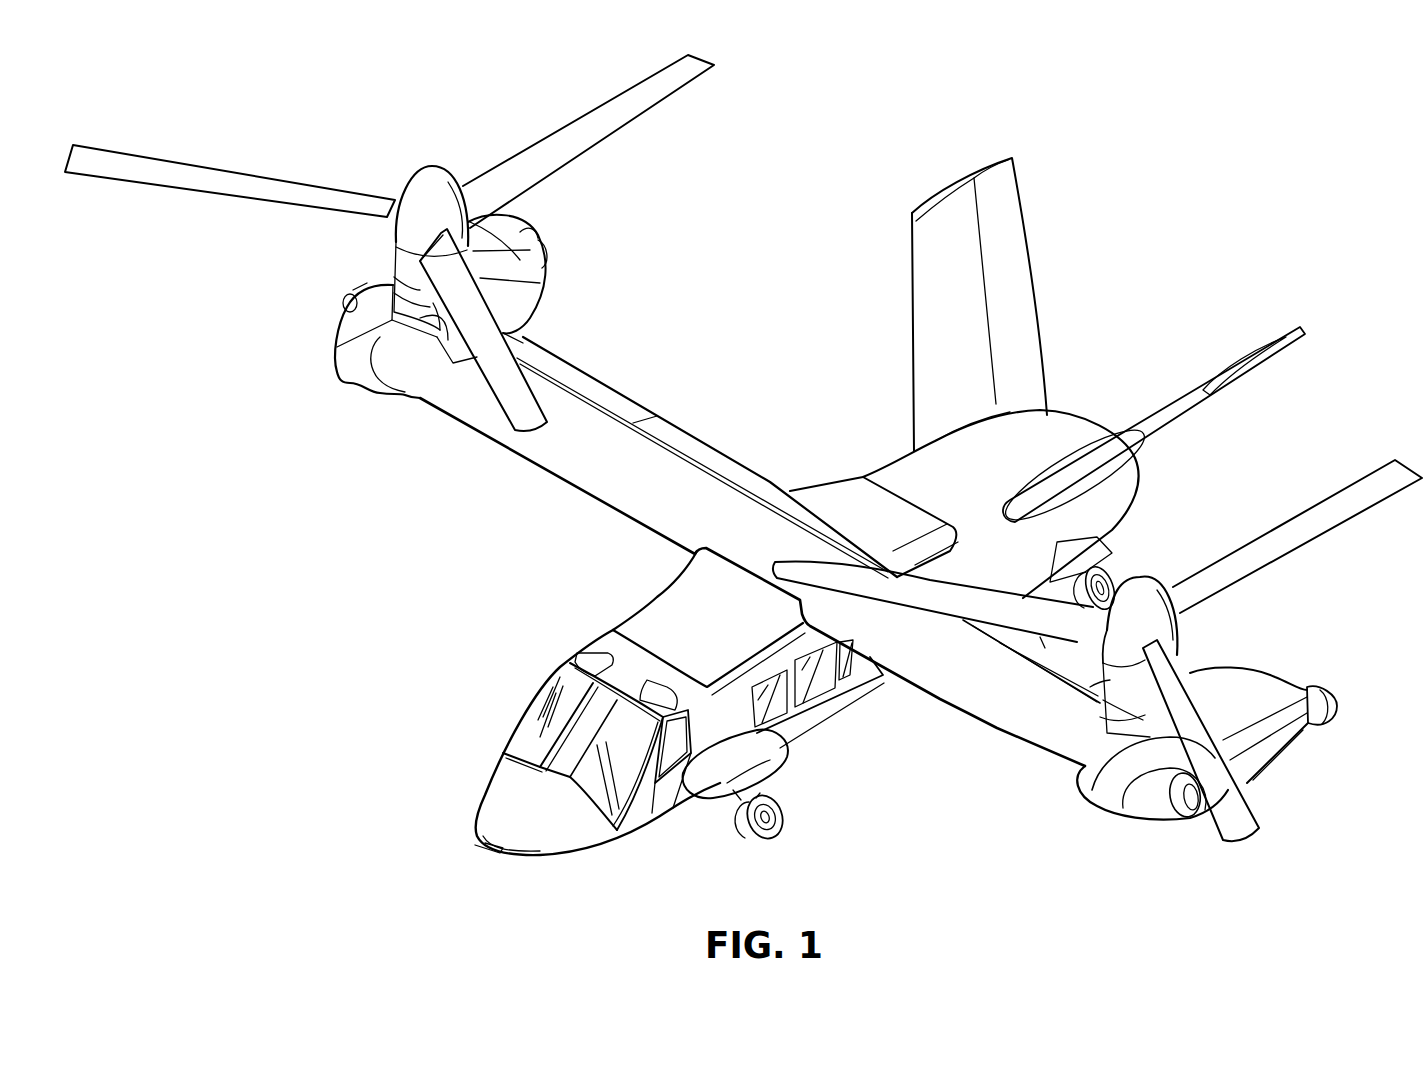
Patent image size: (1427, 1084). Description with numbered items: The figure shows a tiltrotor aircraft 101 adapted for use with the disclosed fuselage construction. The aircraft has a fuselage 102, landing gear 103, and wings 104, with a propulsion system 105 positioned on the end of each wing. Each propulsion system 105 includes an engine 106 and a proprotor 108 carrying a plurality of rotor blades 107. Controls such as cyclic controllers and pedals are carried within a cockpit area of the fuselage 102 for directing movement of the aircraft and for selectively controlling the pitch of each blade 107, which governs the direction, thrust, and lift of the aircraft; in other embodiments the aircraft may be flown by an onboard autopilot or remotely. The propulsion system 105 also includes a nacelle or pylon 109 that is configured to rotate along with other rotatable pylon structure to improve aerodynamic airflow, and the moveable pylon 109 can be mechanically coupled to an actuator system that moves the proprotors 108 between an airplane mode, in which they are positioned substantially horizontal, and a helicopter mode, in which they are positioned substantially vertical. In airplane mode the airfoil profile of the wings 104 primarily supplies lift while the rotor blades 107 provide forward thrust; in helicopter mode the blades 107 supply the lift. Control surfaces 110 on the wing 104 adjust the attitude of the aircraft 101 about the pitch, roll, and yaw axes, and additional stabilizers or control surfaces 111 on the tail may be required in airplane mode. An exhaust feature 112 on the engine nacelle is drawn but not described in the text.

The tiltrotor aircraft 101 is at (1220, 106).
The fuselage 102 is at (563, 858).
The landing gear 103 is at (768, 834).
The wings 104 is at (584, 478).
The propulsion system 105 is at (314, 327).
The engine 106 is at (537, 303).
The rotor blades 107 is at (210, 164).
The proprotor 108 is at (432, 168).
The nacelle or pylon 109 is at (393, 257).
The control surfaces 110 is at (622, 407).
The stabilizers or control surfaces 111 is at (1030, 251).
The exhaust nozzle 112 is at (528, 233).